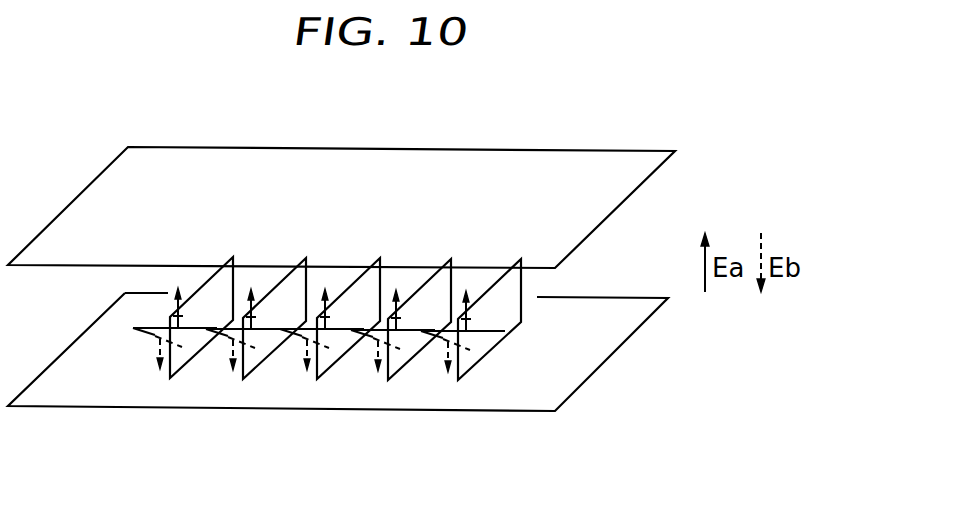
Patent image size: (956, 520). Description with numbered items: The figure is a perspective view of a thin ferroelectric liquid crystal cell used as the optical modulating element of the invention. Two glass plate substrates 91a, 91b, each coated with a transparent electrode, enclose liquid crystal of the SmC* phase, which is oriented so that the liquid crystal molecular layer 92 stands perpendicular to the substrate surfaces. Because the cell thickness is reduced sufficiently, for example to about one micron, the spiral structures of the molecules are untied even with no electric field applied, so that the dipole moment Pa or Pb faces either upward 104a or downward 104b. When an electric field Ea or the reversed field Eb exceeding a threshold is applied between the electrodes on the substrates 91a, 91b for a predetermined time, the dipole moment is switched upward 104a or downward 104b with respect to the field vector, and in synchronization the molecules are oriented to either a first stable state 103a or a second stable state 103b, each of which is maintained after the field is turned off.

The substrate 91a is at (642, 150).
The substrate 91b is at (607, 337).
The liquid crystal molecular layer 92 is at (524, 285).
The first stable state 103a is at (203, 323).
The second stable state 103b is at (178, 347).
The upward dipole moment 104a is at (178, 290).
The downward dipole moment 104b is at (160, 350).